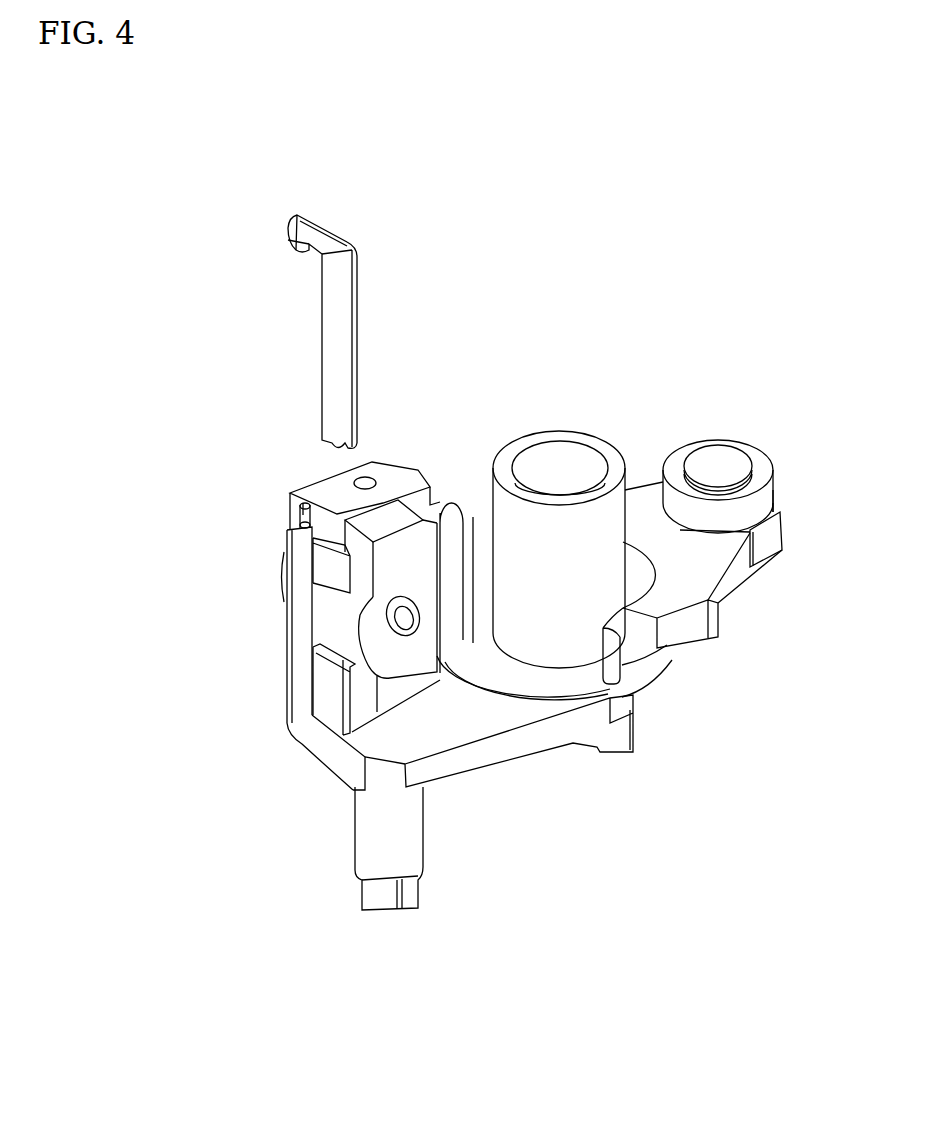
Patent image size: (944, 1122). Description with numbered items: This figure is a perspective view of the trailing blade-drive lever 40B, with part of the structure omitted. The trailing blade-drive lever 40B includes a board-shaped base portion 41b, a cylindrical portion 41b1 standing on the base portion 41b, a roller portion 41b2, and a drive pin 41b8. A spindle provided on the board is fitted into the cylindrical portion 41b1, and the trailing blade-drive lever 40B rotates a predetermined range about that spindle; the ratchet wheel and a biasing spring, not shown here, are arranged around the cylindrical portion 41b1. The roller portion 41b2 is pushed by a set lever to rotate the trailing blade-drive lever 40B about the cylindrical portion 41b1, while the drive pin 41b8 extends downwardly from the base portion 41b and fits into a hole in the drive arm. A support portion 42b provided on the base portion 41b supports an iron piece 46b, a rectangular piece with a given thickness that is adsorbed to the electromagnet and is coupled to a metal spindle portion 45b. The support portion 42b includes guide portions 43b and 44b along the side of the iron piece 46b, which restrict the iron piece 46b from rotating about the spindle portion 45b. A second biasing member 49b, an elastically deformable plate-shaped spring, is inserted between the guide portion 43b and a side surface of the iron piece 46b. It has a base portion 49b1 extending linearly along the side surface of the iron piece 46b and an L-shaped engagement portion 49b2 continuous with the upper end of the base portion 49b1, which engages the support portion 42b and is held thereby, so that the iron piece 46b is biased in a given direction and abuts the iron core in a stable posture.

The trailing blade-drive lever 40B is at (740, 587).
The base portion 41b is at (669, 666).
The cylindrical portion 41b1 is at (588, 443).
The roller portion 41b2 is at (748, 445).
The drive pin 41b8 is at (407, 860).
The support portion 42b is at (283, 545).
The guide portion 43b is at (323, 687).
The guide portion 44b is at (418, 493).
The spindle portion 45b is at (407, 620).
The iron piece 46b is at (380, 513).
The second biasing member 49b is at (342, 237).
The base portion 49b1 is at (340, 360).
The engagement portion 49b2 is at (297, 233).